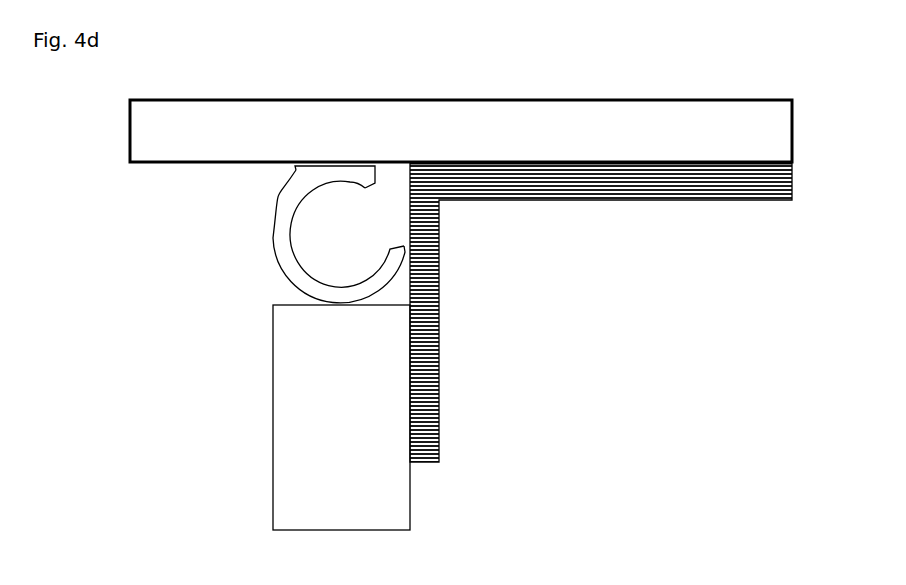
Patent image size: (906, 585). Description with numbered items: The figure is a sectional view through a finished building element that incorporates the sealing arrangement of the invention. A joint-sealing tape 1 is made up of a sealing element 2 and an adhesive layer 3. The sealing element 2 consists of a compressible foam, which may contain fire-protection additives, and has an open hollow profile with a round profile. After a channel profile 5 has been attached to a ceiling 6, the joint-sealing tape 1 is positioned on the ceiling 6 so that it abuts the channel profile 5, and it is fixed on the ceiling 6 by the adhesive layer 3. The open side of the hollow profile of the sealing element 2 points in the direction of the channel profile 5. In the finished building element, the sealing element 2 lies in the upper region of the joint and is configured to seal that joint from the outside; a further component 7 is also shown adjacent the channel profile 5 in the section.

The joint-sealing tape 1 is at (268, 248).
The sealing element 2 is at (360, 292).
The adhesive layer 3 is at (333, 168).
The channel profile 5 is at (570, 180).
The ceiling 6 is at (713, 137).
The housing component 7 is at (370, 508).